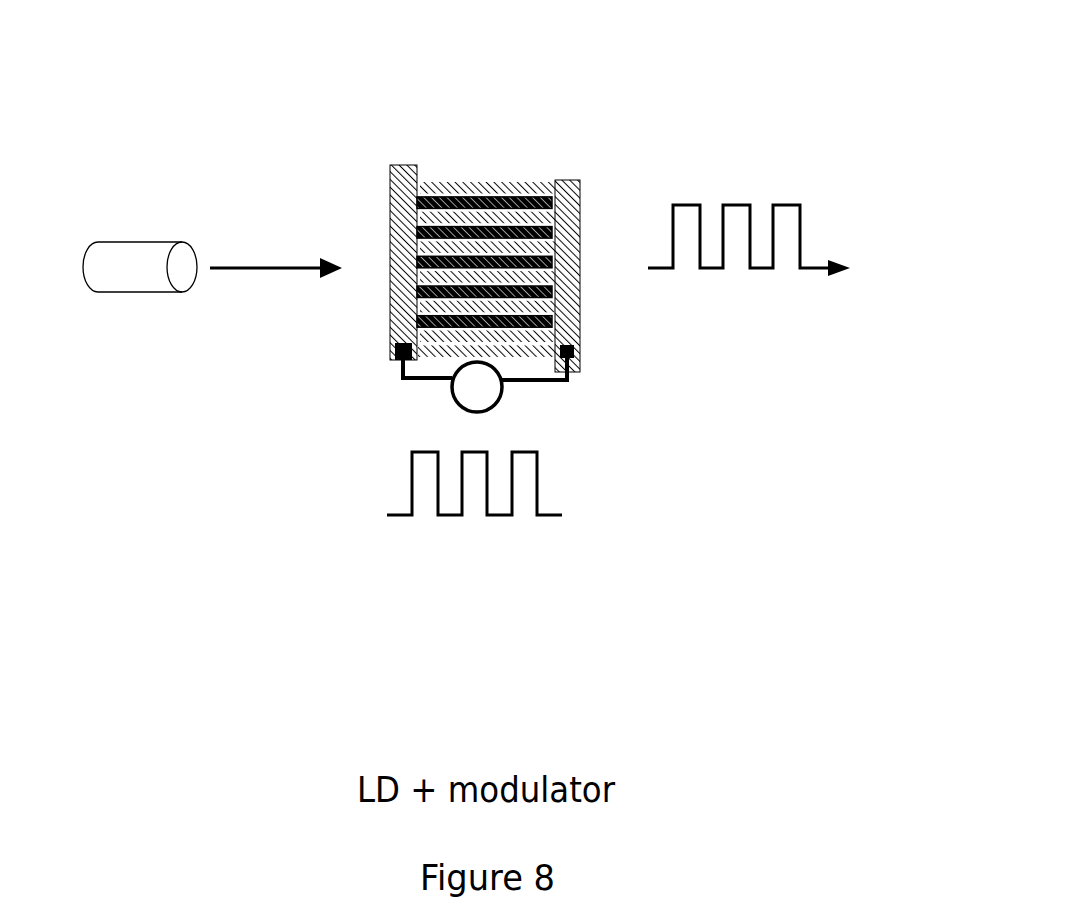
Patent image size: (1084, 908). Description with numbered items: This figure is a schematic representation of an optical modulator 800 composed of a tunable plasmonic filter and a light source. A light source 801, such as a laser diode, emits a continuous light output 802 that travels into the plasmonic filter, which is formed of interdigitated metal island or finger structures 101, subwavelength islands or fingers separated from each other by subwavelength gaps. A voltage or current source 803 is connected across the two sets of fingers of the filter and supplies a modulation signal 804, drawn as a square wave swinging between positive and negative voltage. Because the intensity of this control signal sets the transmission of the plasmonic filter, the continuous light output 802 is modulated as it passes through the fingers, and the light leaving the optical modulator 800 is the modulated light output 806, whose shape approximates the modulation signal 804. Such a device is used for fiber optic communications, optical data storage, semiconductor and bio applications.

The optical modulator 800 is at (502, 303).
The interdigitated metal island or finger structures 101 is at (395, 187).
The light source 801 is at (112, 312).
The continuous light output 802 is at (276, 271).
The source 803 is at (500, 398).
The modulation signal 804 is at (678, 475).
The modulated light output 806 is at (789, 190).